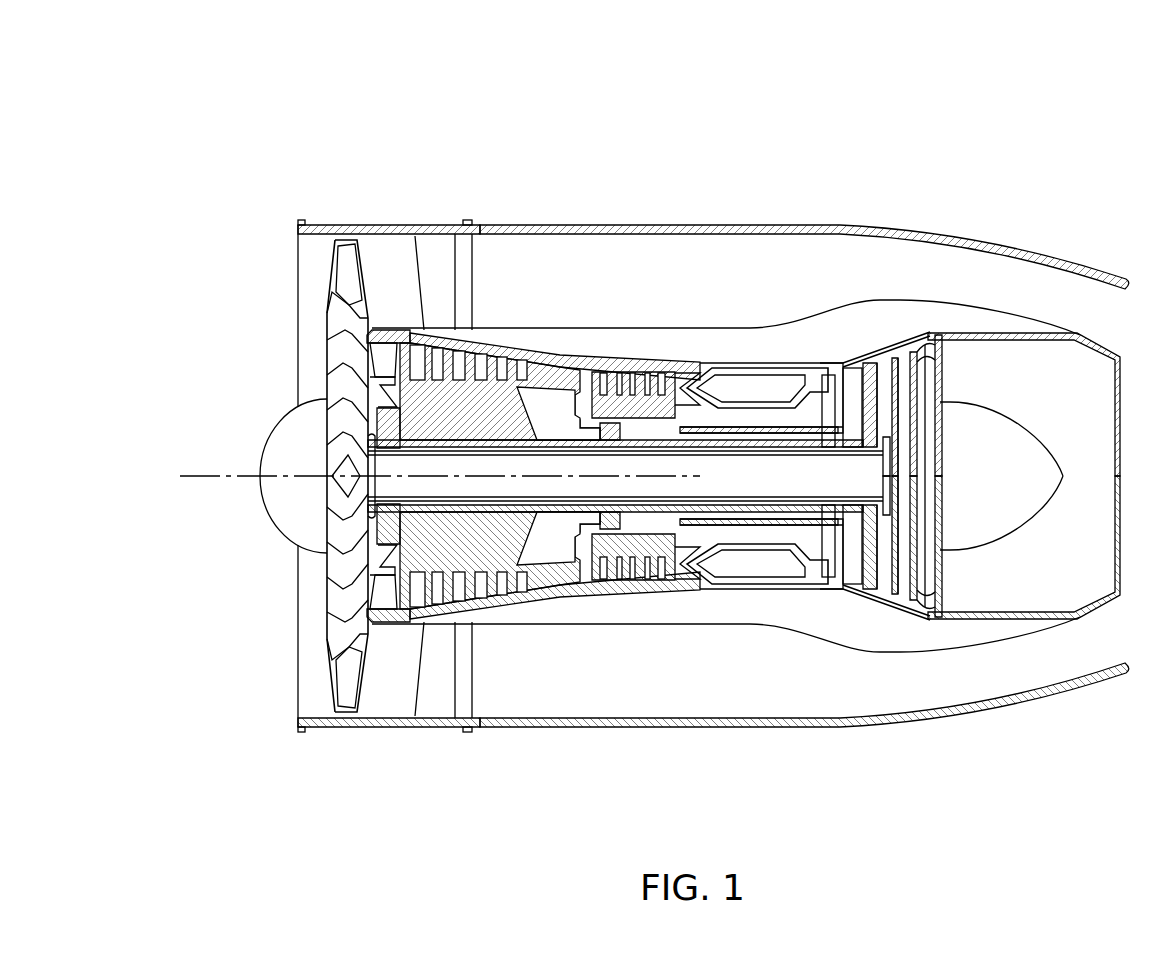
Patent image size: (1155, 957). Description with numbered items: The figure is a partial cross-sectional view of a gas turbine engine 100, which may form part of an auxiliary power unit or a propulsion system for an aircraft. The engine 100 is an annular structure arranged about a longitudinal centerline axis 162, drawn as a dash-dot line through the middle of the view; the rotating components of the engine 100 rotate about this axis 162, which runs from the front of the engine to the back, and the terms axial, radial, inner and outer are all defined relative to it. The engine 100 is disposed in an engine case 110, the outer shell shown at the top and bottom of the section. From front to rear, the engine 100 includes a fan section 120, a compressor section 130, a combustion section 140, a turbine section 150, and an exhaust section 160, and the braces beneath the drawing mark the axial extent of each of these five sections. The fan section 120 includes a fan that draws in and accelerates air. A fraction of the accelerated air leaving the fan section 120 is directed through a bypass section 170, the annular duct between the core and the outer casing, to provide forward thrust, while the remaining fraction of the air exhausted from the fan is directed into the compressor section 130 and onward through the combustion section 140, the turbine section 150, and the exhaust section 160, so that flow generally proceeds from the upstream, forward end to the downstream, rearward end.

The gas turbine engine 100 is at (522, 126).
The engine case 110 is at (512, 226).
The bypass section 170 is at (652, 248).
The longitudinal centerline axis 162 is at (203, 476).
The fan section 120 is at (380, 758).
The compressor section 130 is at (628, 758).
The combustion section 140 is at (790, 758).
The turbine section 150 is at (948, 758).
The exhaust section 160 is at (1070, 758).